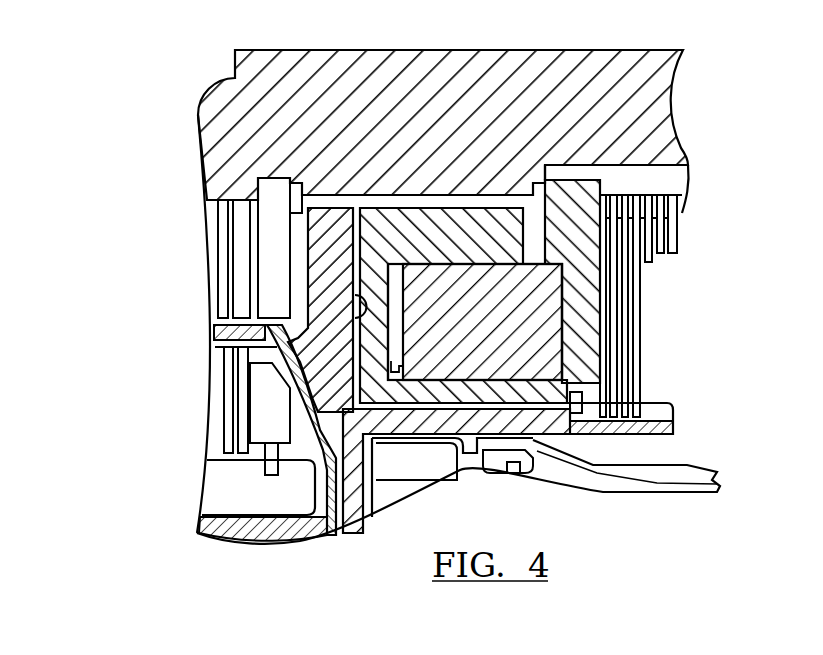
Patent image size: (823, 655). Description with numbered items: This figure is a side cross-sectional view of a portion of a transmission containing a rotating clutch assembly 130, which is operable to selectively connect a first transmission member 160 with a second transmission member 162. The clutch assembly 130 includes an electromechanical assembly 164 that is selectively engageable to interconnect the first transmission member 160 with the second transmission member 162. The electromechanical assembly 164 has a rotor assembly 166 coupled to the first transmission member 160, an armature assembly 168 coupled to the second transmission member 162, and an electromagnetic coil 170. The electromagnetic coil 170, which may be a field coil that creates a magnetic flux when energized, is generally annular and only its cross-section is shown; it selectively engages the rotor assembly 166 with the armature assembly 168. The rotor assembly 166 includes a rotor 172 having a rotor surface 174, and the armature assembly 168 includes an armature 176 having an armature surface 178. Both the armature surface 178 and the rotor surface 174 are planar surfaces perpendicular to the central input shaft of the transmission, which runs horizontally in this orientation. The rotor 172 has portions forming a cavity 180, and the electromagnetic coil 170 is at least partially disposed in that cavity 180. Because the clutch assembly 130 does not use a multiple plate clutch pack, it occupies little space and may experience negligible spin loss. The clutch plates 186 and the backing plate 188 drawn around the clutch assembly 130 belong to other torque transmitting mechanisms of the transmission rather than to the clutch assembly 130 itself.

The clutch assembly 130 is at (108, 125).
The first transmission member 160 is at (440, 423).
The second transmission member 162 is at (257, 527).
The electromechanical assembly 164 is at (356, 195).
The rotor assembly 166 is at (466, 195).
The armature assembly 168 is at (335, 195).
The electromagnetic coil 170 is at (520, 345).
The rotor 172 is at (500, 243).
The rotor surface 174 is at (350, 243).
The armature 176 is at (332, 274).
The armature surface 178 is at (365, 298).
The cavity 180 is at (395, 372).
The clutch plates 186 is at (228, 212).
The backing plate 188 is at (573, 237).